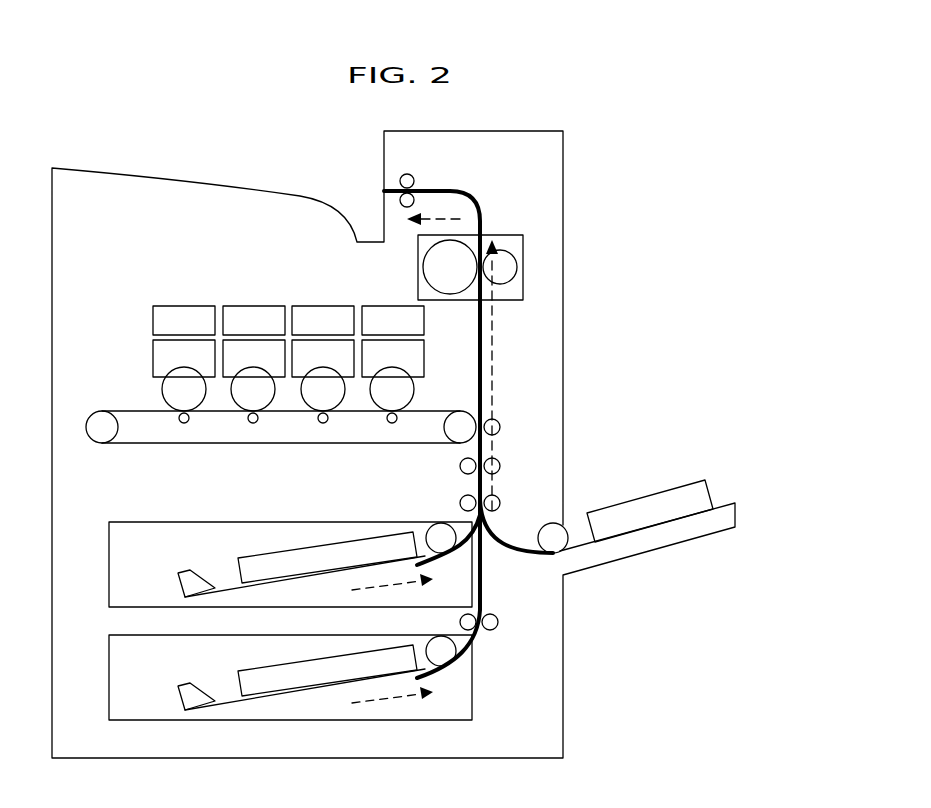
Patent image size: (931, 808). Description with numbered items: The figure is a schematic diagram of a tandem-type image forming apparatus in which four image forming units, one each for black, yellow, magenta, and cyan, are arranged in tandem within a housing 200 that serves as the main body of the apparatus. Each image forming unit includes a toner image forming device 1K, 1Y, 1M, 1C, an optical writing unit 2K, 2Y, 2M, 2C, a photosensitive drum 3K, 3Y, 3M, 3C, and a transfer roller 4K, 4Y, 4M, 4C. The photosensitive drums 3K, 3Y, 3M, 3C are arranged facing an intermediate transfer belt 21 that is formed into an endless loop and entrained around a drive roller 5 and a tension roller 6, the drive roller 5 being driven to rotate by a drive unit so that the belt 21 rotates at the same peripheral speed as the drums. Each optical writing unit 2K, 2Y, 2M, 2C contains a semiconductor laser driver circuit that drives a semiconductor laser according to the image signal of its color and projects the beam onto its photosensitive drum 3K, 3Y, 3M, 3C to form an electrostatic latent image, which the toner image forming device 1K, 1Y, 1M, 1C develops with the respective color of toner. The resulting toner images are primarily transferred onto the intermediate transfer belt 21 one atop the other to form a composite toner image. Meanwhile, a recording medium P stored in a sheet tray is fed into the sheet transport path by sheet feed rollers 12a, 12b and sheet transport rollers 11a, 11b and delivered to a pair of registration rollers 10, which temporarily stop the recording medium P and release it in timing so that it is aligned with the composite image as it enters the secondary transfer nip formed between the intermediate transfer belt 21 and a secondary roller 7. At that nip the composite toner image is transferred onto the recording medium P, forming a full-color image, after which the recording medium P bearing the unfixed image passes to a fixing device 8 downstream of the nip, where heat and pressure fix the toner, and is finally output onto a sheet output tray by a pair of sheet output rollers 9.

The housing 200 is at (563, 170).
The pair of sheet output rollers 9 is at (415, 180).
The fixing device 8 is at (505, 235).
The toner image forming device 1K is at (172, 345).
The toner image forming device 1Y is at (241, 345).
The toner image forming device 1M is at (309, 345).
The toner image forming device 1C is at (424, 360).
The optical writing unit 2K is at (198, 306).
The optical writing unit 2Y is at (268, 306).
The optical writing unit 2M is at (334, 306).
The optical writing unit 2C is at (424, 322).
The photosensitive drum 3K is at (198, 399).
The photosensitive drum 3Y is at (267, 399).
The photosensitive drum 3M is at (338, 399).
The photosensitive drum 3C is at (407, 399).
The transfer roller 4K is at (176, 424).
The transfer roller 4Y is at (246, 424).
The transfer roller 4M is at (316, 424).
The transfer roller 4C is at (385, 424).
The intermediate transfer belt 21 is at (135, 411).
The tension roller 6 is at (118, 428).
The drive roller 5 is at (466, 409).
The secondary roller 7 is at (500, 427).
The pair of registration rollers 10 is at (500, 466).
The sheet transport roller 11a is at (500, 503).
The sheet transport roller 11b is at (498, 622).
The sheet feed roller 12a is at (440, 522).
The sheet feed roller 12b is at (452, 667).
The recording medium P is at (237, 573).